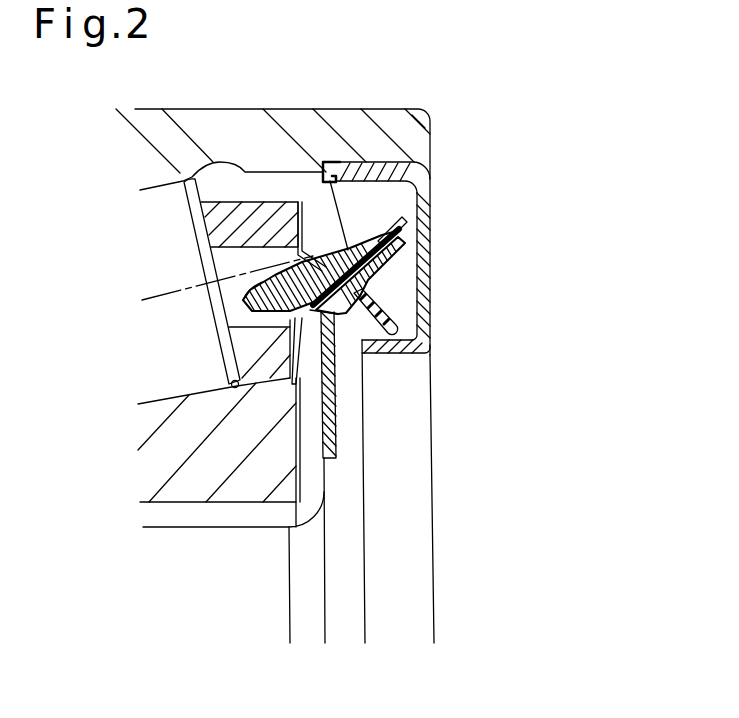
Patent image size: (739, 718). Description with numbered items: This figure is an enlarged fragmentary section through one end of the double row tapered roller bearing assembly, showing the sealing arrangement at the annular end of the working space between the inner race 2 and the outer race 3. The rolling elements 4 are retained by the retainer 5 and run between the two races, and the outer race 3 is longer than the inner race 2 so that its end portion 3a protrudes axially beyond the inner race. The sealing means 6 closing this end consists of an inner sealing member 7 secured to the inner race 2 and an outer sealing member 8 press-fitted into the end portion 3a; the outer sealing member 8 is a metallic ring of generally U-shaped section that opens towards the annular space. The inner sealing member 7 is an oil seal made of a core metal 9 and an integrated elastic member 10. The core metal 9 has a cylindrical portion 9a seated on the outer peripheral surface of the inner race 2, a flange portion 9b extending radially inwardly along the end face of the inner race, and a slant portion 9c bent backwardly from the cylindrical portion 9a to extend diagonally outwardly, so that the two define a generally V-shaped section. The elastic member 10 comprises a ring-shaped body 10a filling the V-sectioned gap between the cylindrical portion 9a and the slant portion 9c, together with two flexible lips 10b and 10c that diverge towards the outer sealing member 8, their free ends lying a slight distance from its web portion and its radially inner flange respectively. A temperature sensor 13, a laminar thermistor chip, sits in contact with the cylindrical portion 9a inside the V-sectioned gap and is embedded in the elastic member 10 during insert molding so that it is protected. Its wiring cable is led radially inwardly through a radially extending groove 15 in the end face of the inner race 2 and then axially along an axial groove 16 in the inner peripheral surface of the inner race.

The inner race 2 is at (172, 480).
The outer race 3 is at (158, 130).
The end portion of the outer race 3a is at (412, 130).
The rolling elements 4 is at (138, 258).
The retainer 5 is at (243, 205).
The sealing means 6 is at (488, 214).
The inner sealing member 7 is at (378, 294).
The outer sealing member 8 is at (436, 241).
The core metal 9 is at (237, 303).
The cylindrical portion 9a is at (290, 380).
The flange portion 9b is at (327, 403).
The slant portion 9c is at (262, 256).
The elastic member 10 is at (325, 258).
The ring-shaped body 10a is at (402, 318).
The flexible lip 10b is at (381, 338).
The flexible lip 10c is at (379, 238).
The temperature sensor 13 is at (237, 385).
The radially extending groove 15 is at (315, 488).
The axial groove 16 is at (217, 518).